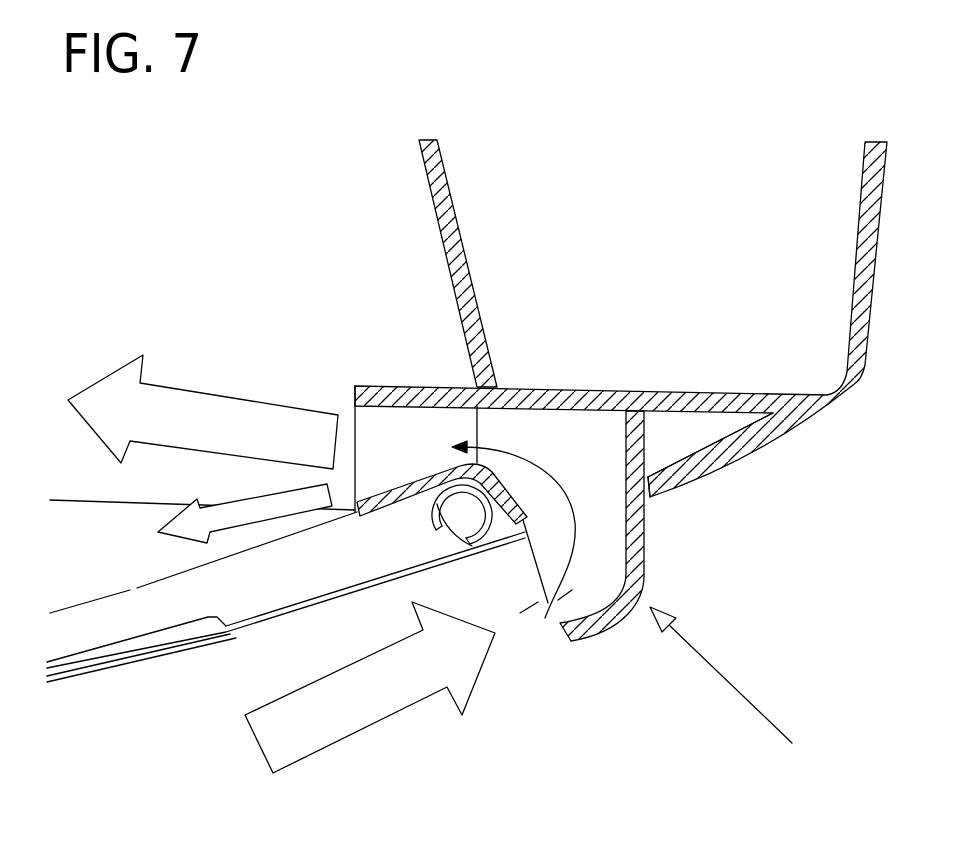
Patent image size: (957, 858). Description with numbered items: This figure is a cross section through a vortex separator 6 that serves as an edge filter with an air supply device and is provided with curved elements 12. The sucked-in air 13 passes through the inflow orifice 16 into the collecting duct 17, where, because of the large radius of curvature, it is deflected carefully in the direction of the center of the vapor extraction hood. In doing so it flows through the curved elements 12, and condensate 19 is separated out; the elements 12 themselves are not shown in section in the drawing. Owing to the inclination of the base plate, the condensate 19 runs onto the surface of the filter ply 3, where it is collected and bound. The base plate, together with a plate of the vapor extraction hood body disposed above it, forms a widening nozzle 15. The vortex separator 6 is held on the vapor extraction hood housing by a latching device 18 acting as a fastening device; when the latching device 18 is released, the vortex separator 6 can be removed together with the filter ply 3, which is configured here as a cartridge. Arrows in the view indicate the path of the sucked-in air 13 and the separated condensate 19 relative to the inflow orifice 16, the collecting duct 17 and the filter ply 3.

The filter ply 3 is at (162, 605).
The vortex separator 6 is at (732, 691).
The curved elements 12 is at (417, 432).
The sucked-in air 13 is at (210, 436).
The nozzle 15 is at (415, 466).
The inflow orifice 16 is at (543, 618).
The collecting duct 17 is at (603, 553).
The latching device 18 is at (653, 490).
The condensate 19 is at (180, 523).